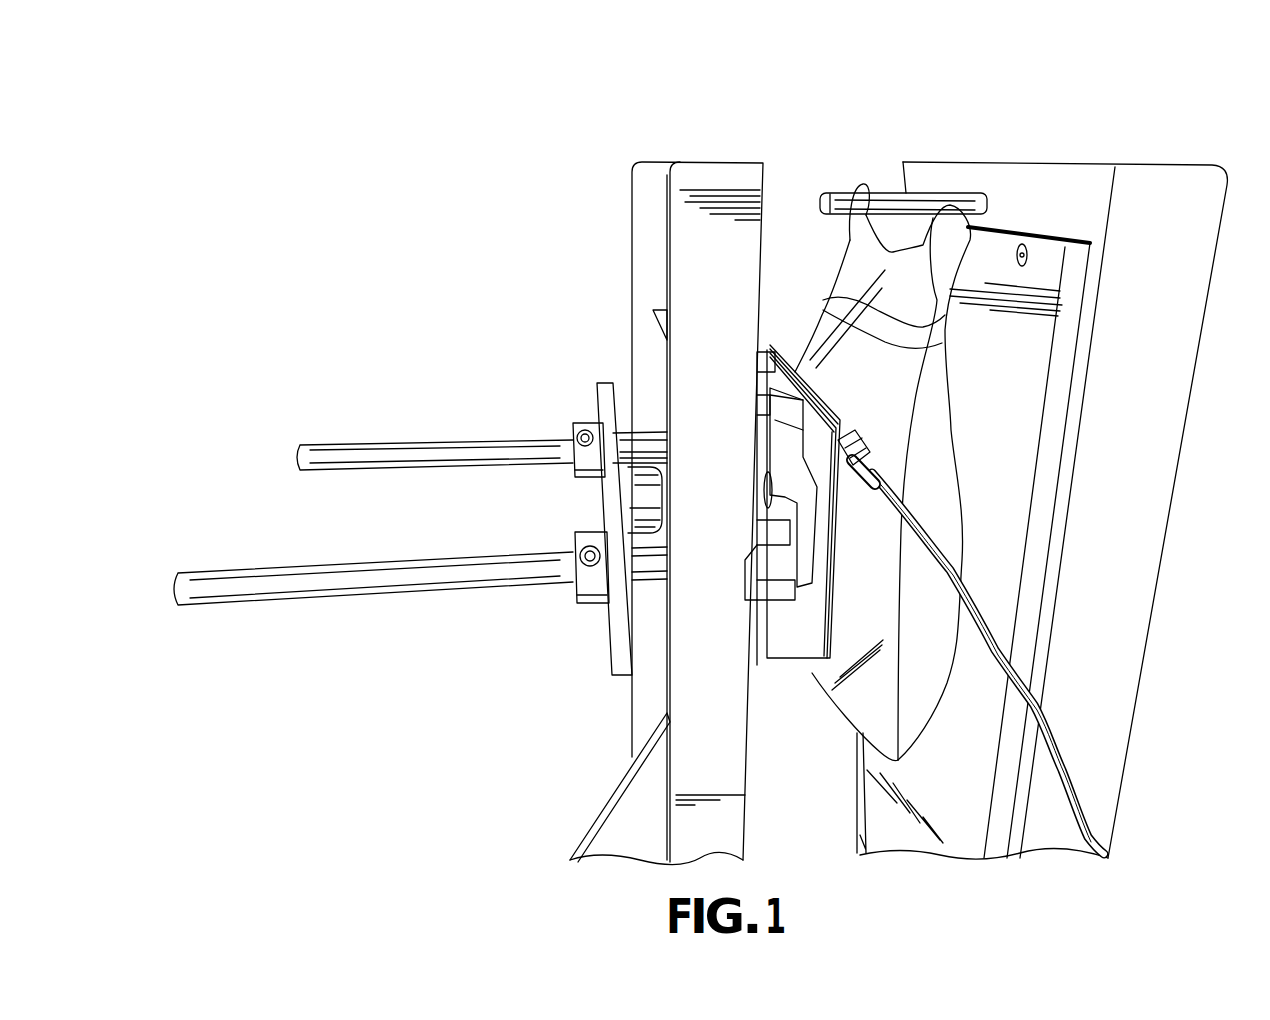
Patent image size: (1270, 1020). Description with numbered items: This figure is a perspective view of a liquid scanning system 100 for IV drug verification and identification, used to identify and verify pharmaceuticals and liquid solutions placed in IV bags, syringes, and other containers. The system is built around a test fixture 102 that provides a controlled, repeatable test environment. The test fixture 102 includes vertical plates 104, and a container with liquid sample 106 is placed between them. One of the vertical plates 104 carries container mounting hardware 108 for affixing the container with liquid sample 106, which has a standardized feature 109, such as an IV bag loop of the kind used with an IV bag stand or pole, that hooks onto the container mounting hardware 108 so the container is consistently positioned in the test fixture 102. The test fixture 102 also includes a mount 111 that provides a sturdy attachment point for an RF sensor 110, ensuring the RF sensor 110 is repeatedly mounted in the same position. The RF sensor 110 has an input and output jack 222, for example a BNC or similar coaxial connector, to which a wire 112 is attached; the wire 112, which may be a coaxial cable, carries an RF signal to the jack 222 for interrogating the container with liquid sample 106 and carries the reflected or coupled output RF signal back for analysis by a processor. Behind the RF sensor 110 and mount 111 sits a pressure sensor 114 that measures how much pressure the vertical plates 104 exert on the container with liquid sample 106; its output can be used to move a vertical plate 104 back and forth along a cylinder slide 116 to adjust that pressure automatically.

The liquid scanning system 100 is at (423, 117).
The test fixture 102 is at (987, 115).
The vertical plates 104 is at (668, 163).
The container with liquid sample 106 is at (918, 492).
The container mounting hardware 108 is at (910, 200).
The standardized feature 109 is at (870, 197).
The RF sensor 110 is at (828, 610).
The mount 111 is at (787, 593).
The wire 112 is at (1057, 733).
The pressure sensor 114 is at (637, 487).
The cylinder slide 116 is at (388, 452).
The input and output jack 222 is at (866, 440).